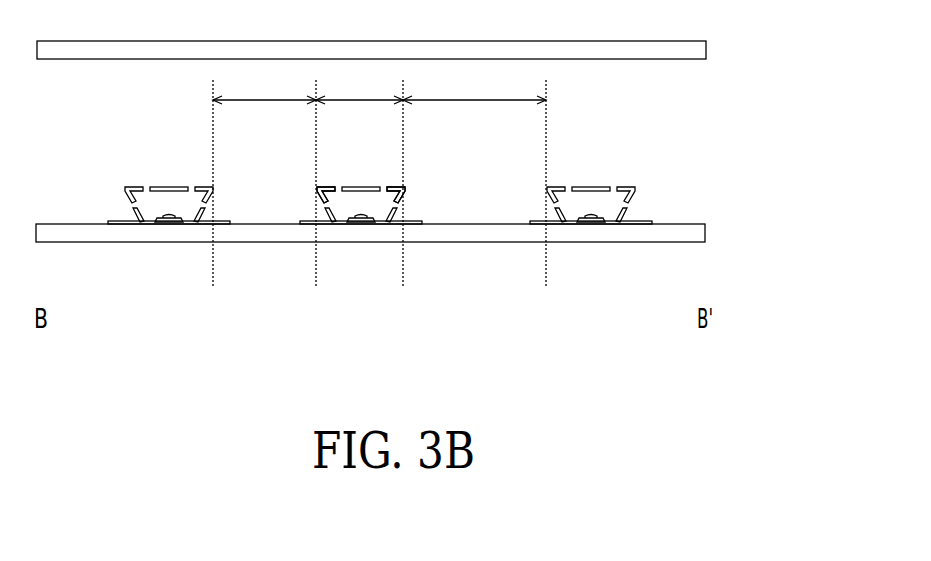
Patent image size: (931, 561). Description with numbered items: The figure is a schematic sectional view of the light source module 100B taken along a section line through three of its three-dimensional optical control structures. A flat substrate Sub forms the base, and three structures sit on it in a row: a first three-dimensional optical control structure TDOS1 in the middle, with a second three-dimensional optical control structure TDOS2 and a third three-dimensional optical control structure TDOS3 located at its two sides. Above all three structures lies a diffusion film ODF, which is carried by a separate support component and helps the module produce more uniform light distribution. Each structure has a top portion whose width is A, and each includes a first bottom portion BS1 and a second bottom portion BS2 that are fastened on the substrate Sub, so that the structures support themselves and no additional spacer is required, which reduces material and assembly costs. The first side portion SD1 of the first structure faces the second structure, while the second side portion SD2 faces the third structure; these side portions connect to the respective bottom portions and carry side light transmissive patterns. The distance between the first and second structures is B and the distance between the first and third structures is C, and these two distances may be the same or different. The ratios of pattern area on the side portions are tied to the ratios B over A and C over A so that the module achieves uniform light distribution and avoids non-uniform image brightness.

The diffusion film ODF is at (706, 50).
The substrate Sub is at (705, 235).
The first three-dimensional optical control structure TDOS1 is at (358, 186).
The second three-dimensional optical control structure TDOS2 is at (592, 186).
The third three-dimensional optical control structure TDOS3 is at (170, 186).
The first side portion SD1 is at (405, 193).
The second side portion SD2 is at (317, 193).
The first bottom portion BS1 is at (634, 225).
The second bottom portion BS2 is at (541, 225).
The width of top portion A is at (359, 86).
The distance between first and second three-dimensional optical control structures B is at (474, 86).
The distance between first and third three-dimensional optical control structures C is at (264, 86).
The light source module 100B is at (757, 392).